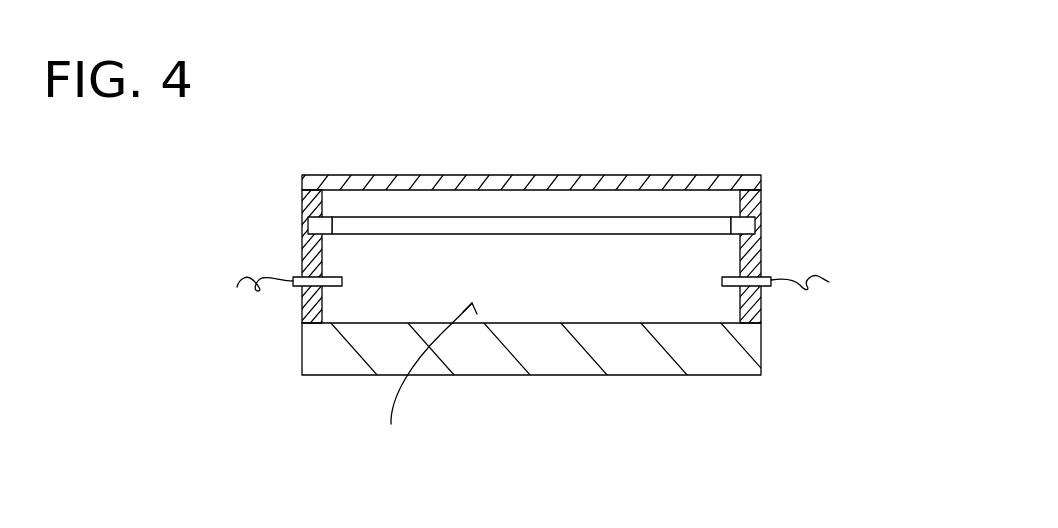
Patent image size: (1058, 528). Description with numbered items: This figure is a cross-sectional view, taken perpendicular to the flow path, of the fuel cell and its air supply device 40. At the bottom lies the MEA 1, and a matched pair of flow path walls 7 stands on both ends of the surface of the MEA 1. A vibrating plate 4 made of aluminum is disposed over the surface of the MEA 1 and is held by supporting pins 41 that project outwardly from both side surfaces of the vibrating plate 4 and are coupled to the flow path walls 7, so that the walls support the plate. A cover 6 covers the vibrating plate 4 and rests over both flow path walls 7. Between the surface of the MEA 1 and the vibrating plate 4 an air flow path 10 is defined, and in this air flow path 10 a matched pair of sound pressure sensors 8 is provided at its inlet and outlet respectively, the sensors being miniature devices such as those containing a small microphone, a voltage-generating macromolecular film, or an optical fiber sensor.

The MEA 1 is at (552, 368).
The vibrating plate 4 is at (538, 229).
The cover 6 is at (531, 181).
The flow path walls 7 is at (307, 248).
The sound pressure sensors 8 is at (331, 277).
The air flow path 10 is at (428, 377).
The air supply device 40 is at (796, 163).
The supporting pins 41 is at (309, 220).